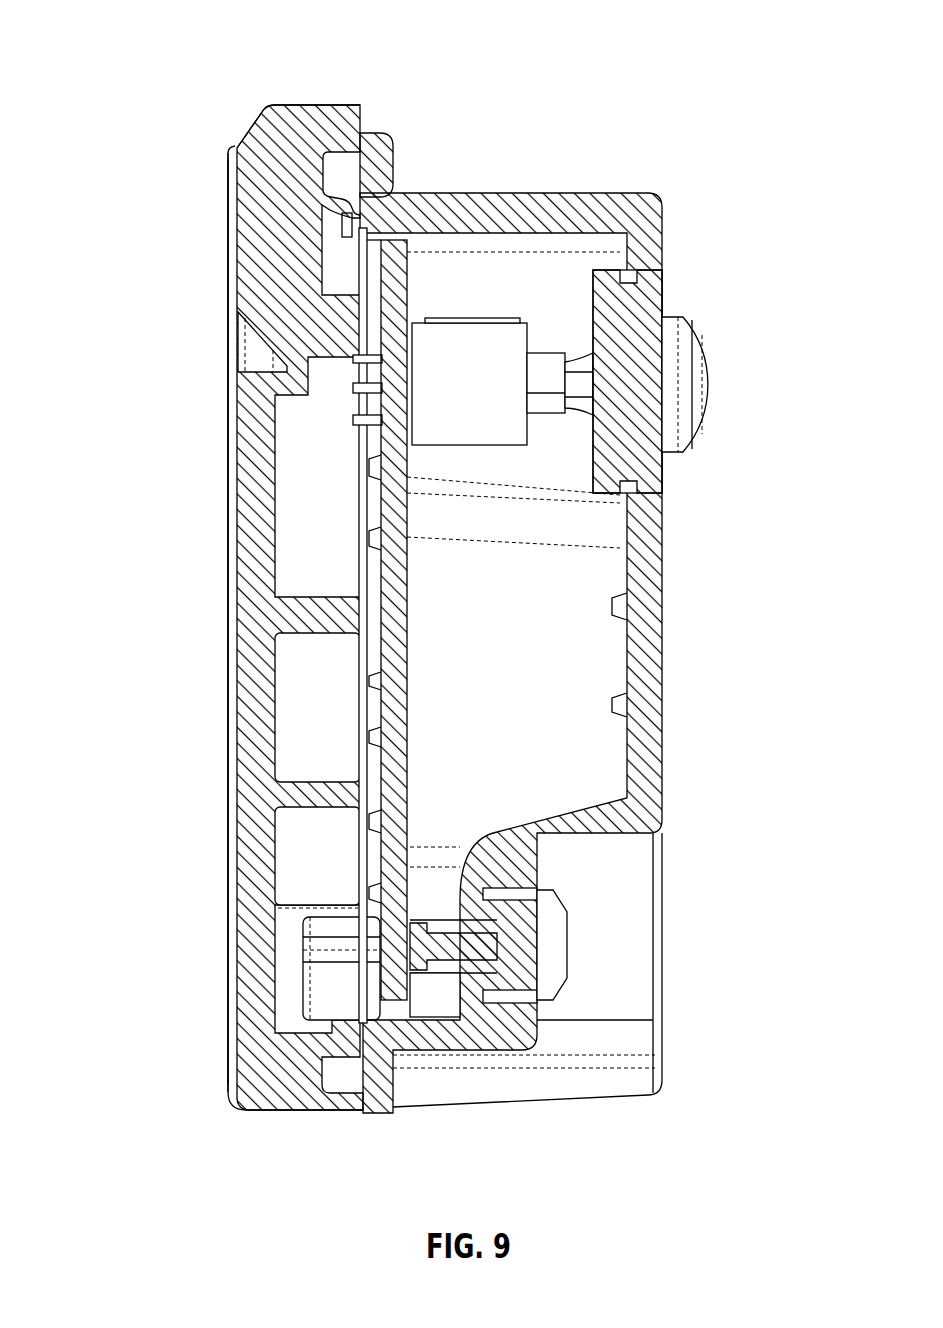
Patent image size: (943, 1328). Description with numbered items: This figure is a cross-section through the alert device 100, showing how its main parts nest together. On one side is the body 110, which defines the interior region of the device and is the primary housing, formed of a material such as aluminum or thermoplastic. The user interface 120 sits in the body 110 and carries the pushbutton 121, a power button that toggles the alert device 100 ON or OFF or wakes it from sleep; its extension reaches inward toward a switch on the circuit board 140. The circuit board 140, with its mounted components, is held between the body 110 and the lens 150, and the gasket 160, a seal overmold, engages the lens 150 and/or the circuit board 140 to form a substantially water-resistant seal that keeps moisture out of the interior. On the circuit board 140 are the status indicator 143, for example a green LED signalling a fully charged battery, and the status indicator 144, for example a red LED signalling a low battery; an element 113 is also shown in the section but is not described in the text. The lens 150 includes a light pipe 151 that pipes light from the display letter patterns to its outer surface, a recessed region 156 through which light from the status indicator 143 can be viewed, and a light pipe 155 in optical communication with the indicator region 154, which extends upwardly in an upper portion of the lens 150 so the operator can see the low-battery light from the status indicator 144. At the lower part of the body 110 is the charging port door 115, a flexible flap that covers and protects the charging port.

The alert device 100 is at (138, 33).
The body 110 is at (606, 195).
The actuator component 113 is at (495, 362).
The charging port door 115 is at (568, 944).
The user interface 120 is at (634, 311).
The pushbutton 121 is at (709, 384).
The circuit board 140 is at (408, 670).
The status indicator 143 is at (380, 393).
The status indicator 144 is at (373, 323).
The lens 150 is at (229, 437).
The light pipe 151 is at (272, 617).
The indicator region 154 is at (311, 104).
The light pipe 155 is at (265, 250).
The region 156 is at (248, 352).
The gasket 160 is at (378, 165).